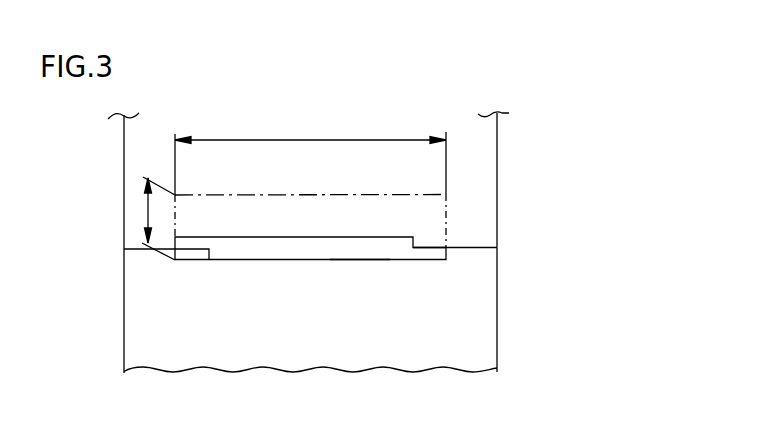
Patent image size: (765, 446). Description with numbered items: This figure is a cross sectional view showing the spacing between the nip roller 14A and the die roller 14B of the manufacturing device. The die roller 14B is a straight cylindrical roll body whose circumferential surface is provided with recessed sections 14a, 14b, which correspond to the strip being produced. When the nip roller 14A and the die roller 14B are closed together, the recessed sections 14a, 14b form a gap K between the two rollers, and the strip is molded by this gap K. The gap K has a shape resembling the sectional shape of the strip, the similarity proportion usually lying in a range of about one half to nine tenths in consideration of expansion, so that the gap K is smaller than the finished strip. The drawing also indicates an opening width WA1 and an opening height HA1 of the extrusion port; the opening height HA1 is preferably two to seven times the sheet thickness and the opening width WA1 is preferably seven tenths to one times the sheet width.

The nip roller 14A is at (477, 198).
The die roller 14B is at (478, 323).
The recessed section 14a is at (383, 237).
The recessed section 14b is at (308, 259).
The gap K is at (358, 252).
The opening width WA1 is at (310, 138).
The opening height HA1 is at (147, 213).